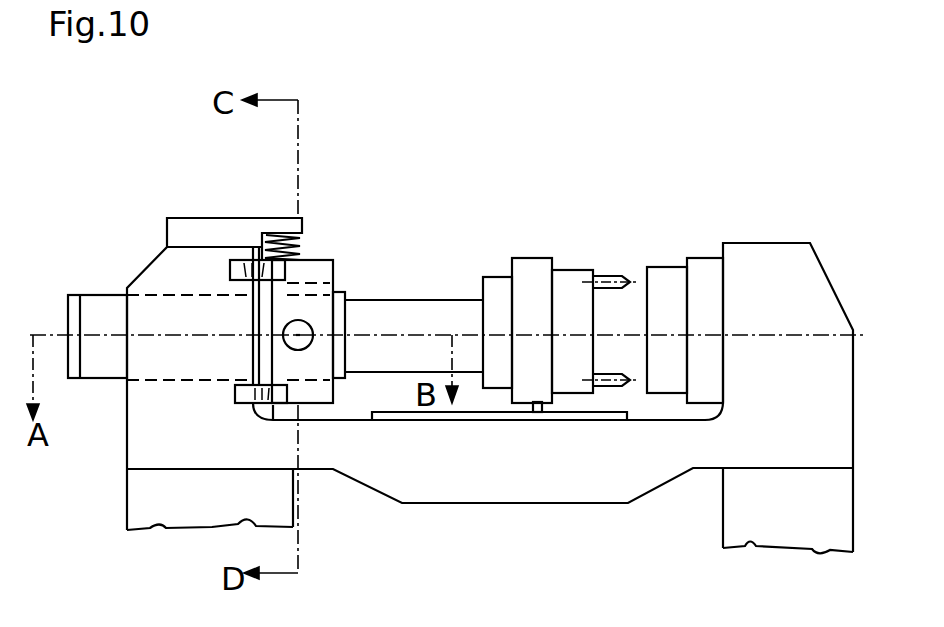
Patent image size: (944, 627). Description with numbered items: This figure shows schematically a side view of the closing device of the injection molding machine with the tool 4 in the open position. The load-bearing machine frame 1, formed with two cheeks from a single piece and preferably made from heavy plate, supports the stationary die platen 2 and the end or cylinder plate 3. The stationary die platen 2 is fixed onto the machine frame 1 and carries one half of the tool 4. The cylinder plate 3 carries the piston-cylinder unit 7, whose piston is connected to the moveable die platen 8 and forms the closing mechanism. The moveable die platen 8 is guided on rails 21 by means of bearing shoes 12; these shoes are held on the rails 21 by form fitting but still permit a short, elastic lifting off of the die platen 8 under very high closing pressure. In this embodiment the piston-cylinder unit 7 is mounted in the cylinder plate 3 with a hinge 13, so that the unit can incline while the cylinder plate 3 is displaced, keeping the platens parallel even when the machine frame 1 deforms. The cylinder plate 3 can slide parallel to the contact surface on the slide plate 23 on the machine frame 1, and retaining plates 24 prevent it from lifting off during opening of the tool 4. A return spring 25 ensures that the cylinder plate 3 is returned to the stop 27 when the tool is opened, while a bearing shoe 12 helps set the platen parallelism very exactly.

The machine frame 1 is at (148, 432).
The stationary die platen 2 is at (705, 282).
The cylinder plate 3 is at (313, 312).
The tool 4 is at (670, 295).
The piston-cylinder unit 7 is at (99, 310).
The moveable die platen 8 is at (532, 275).
The bearing shoe 12 is at (542, 418).
The hinge 13 is at (305, 348).
The rails 21 is at (502, 418).
The slide plate 23 is at (199, 264).
The retaining plates 24 is at (243, 270).
The return spring 25 is at (283, 258).
The stop 27 is at (287, 413).